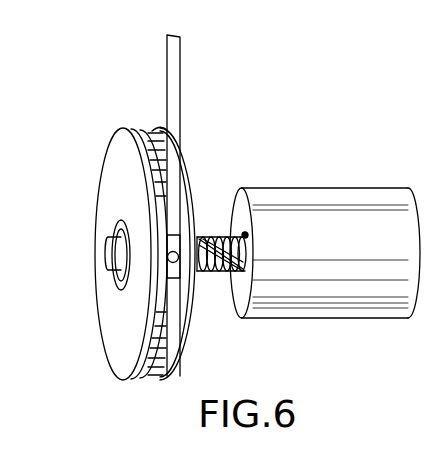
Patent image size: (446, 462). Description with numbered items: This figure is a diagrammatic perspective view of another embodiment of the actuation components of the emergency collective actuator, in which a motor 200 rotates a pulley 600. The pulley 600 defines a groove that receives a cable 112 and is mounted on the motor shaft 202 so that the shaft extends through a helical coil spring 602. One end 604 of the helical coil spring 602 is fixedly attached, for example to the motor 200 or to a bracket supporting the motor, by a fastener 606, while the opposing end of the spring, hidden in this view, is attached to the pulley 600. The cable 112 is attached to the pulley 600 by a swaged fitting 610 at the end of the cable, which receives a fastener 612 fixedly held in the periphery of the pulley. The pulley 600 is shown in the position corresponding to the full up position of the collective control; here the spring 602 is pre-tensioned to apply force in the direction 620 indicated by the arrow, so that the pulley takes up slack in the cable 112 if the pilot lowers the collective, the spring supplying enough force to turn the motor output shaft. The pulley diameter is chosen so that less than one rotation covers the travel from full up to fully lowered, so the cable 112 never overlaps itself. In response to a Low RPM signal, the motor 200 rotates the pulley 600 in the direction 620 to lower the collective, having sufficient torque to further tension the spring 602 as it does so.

The direction 620 is at (146, 112).
The cable 112 is at (181, 88).
The pulley 600 is at (189, 159).
The end of the helical coil spring 604 is at (222, 236).
The fastener 606 is at (246, 235).
The motor 200 is at (367, 188).
The motor shaft 202 is at (107, 249).
The fastener 612 is at (168, 262).
The swaged fitting 610 is at (172, 280).
The helical coil spring 602 is at (217, 272).